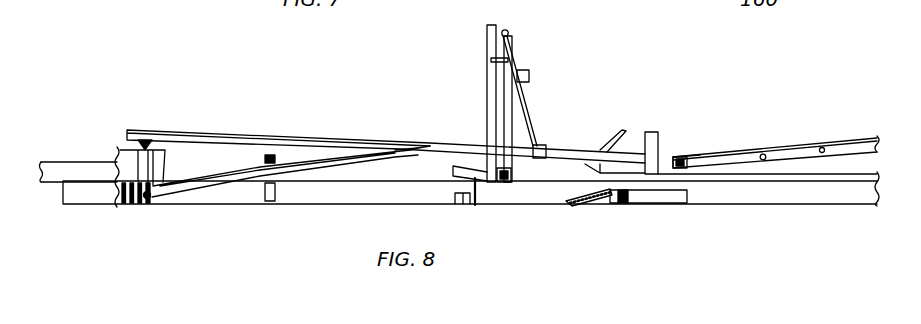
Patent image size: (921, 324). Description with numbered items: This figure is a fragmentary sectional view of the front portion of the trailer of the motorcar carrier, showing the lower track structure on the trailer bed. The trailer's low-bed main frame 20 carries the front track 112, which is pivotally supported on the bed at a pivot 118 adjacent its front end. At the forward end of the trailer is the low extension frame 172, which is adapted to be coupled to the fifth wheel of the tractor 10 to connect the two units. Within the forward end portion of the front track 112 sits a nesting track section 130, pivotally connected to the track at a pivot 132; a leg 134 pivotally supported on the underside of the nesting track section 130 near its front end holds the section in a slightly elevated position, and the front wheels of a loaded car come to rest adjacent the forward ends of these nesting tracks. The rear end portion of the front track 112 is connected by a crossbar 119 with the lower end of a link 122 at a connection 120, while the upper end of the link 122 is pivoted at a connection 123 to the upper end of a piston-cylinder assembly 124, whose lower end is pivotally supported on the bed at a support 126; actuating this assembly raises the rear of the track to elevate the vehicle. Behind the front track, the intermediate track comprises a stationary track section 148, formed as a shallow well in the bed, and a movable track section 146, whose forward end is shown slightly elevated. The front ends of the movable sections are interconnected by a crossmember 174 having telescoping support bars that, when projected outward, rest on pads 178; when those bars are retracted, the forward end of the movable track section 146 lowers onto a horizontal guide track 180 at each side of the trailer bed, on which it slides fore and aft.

The tractor 10 is at (498, 25).
The main frame 20 is at (354, 203).
The front track 112 is at (297, 168).
The pivot 118 is at (150, 200).
The crossbar 119 is at (552, 146).
The connection 120 is at (540, 138).
The link 122 is at (526, 97).
The pivotal connection 123 is at (509, 33).
The piston-cylinder assembly 124 is at (491, 88).
The pivotal support 126 is at (508, 178).
The nesting track section 130 is at (226, 137).
The pivotal connection 132 is at (386, 156).
The leg 134 is at (140, 151).
The movable track section 146 is at (808, 150).
The stationary track section 148 is at (566, 200).
The low extension frame 172 is at (75, 168).
The crossmember 174 is at (682, 156).
The pads 178 is at (686, 172).
The horizontal guide track 180 is at (648, 201).